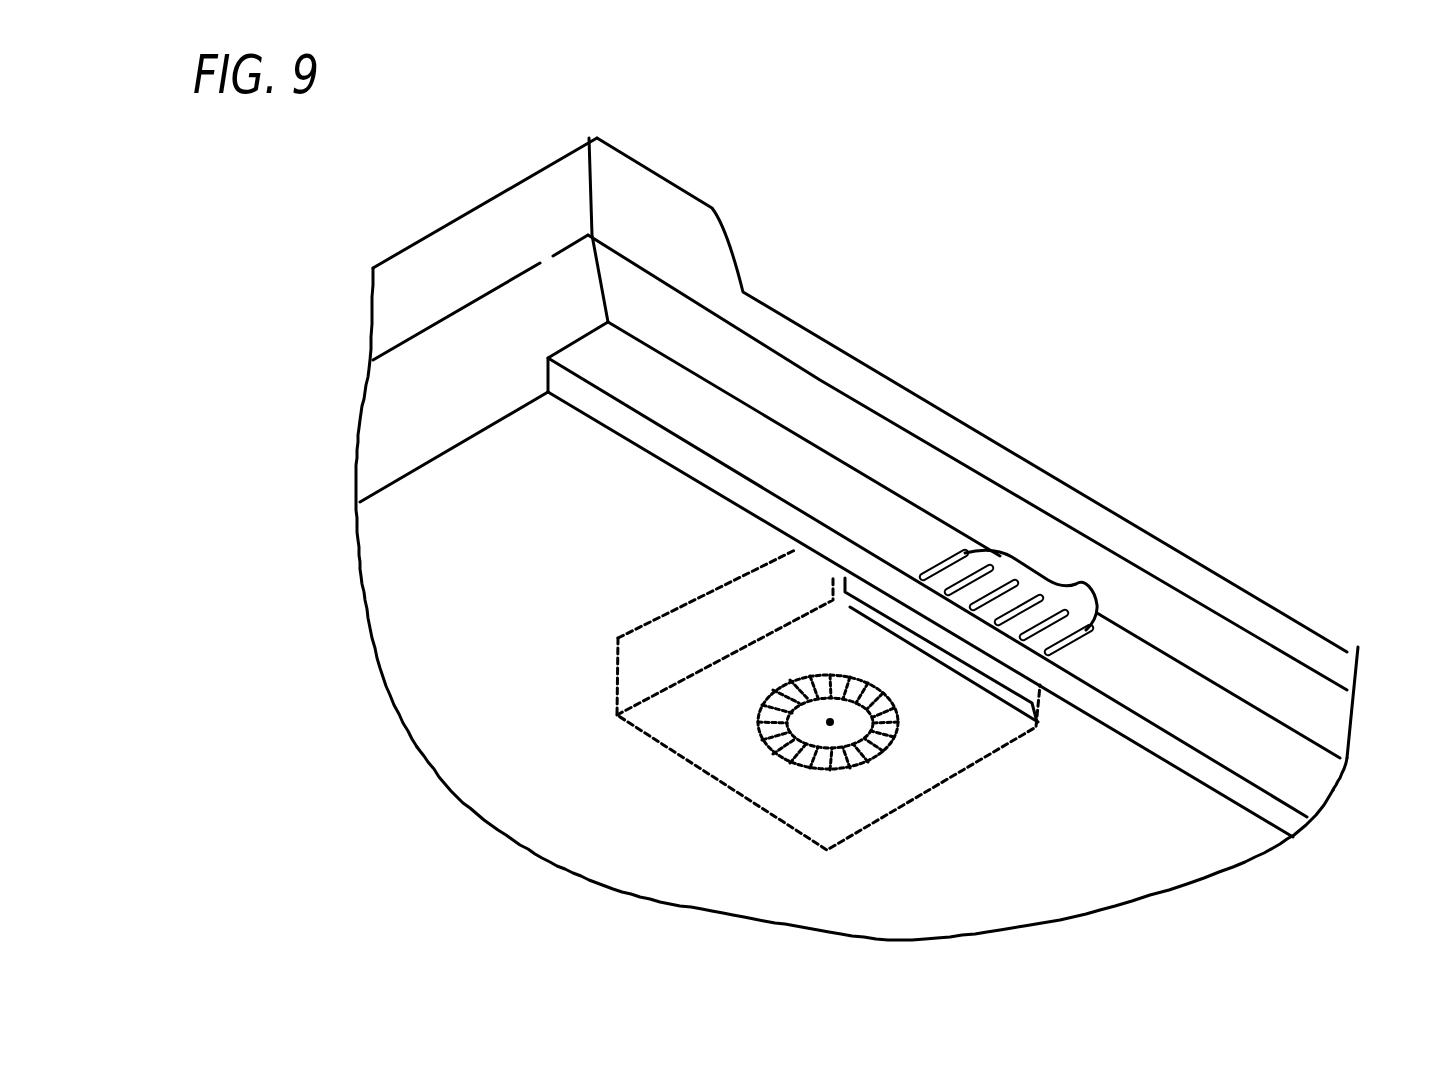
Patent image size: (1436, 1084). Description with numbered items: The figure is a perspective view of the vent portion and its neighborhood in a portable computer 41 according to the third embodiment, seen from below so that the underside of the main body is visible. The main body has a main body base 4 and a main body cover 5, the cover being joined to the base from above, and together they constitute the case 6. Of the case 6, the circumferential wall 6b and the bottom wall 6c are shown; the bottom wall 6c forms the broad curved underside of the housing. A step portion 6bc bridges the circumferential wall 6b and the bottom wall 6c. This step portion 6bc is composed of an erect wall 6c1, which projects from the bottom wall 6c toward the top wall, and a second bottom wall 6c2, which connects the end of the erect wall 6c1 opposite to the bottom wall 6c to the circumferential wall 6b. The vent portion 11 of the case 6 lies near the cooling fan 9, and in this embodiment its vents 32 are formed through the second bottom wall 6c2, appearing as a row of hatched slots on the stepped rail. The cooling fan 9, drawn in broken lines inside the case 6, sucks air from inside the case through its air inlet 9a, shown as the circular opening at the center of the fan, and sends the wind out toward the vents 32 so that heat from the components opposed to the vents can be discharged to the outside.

The portable computer 41 is at (1167, 214).
The case 6 is at (797, 332).
The main body cover 5 is at (1280, 623).
The main body base 4 is at (1318, 763).
The bottom wall 6c is at (1238, 858).
The step portion 6bc is at (622, 442).
The vent portion 11 is at (1036, 522).
The circumferential wall 6b is at (1173, 607).
The second bottom wall 6c2 is at (807, 497).
The erect wall 6c1 is at (740, 495).
The vents 32 is at (1077, 588).
The cooling fan 9 is at (704, 786).
The air inlet 9a is at (862, 768).